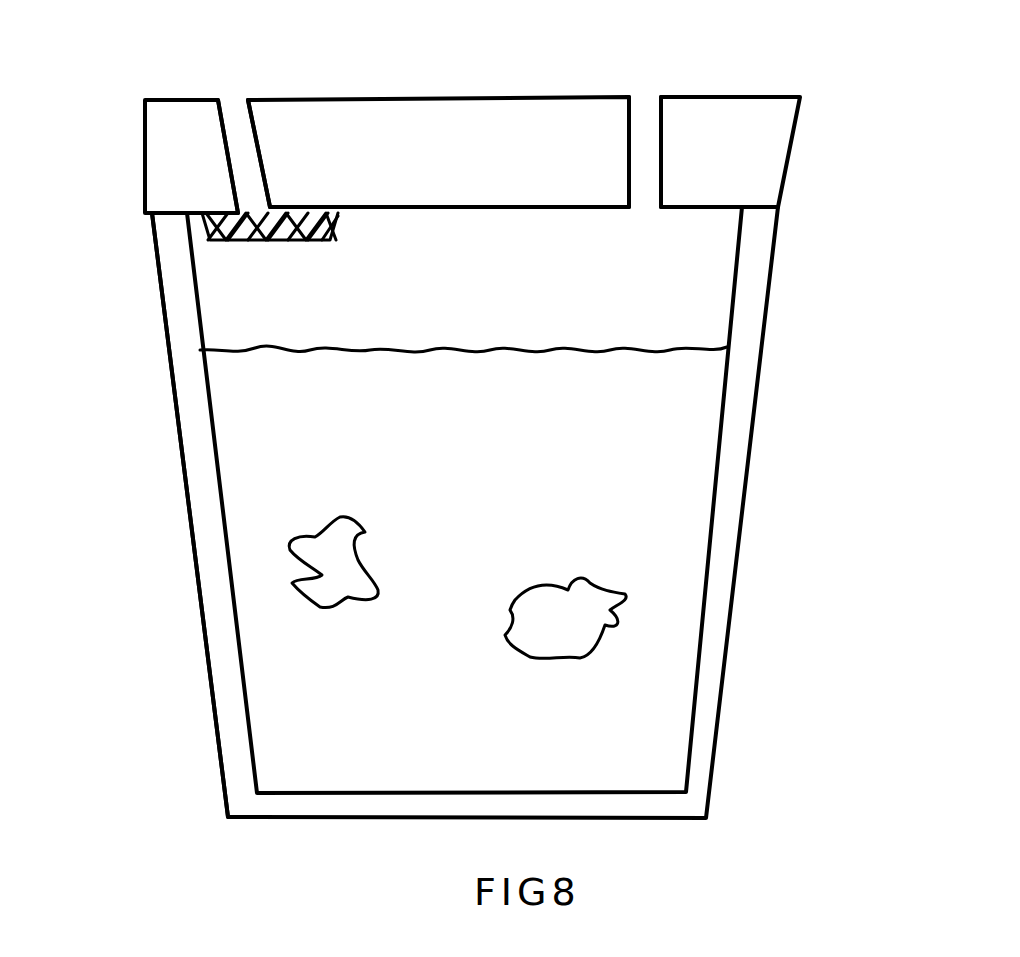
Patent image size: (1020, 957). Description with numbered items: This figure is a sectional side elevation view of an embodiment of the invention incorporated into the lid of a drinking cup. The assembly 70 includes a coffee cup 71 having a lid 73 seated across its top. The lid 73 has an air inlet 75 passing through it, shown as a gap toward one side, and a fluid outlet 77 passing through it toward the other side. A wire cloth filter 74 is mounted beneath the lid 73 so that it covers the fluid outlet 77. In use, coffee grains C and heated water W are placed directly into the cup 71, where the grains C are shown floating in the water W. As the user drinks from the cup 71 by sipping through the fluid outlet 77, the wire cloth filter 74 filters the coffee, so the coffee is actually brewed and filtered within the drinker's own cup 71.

The assembly 70 is at (836, 354).
The coffee cup 71 is at (198, 500).
The lid 73 is at (460, 127).
The wire cloth filter 74 is at (258, 242).
The air inlet 75 is at (640, 82).
The fluid outlet 77 is at (244, 104).
The heated water w is at (604, 333).
The coffee grains C is at (297, 597).